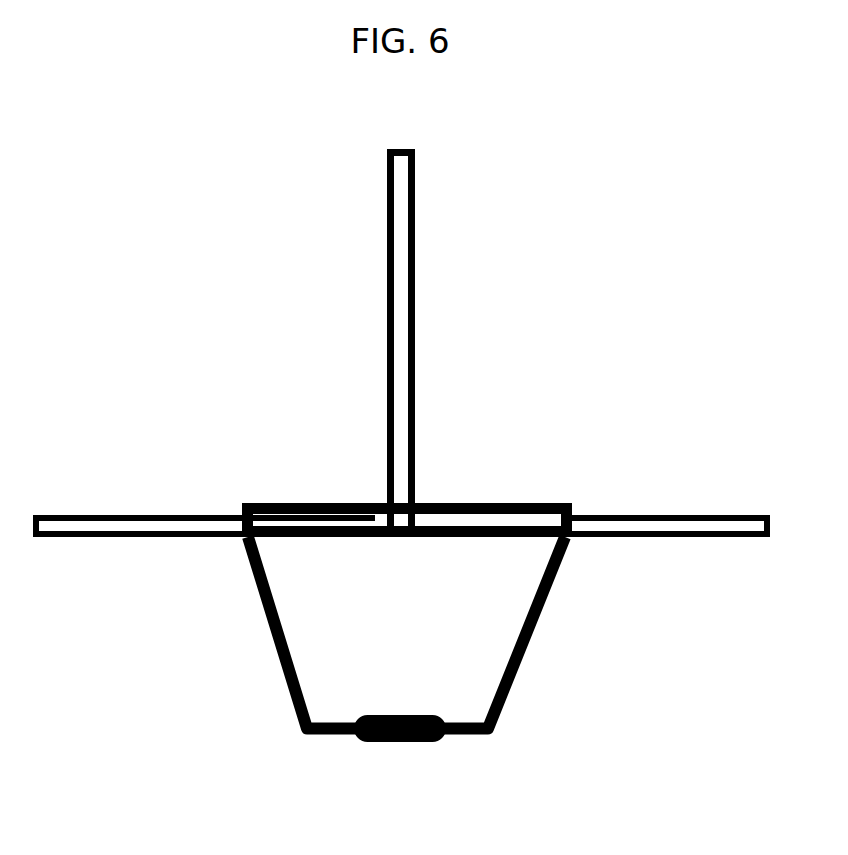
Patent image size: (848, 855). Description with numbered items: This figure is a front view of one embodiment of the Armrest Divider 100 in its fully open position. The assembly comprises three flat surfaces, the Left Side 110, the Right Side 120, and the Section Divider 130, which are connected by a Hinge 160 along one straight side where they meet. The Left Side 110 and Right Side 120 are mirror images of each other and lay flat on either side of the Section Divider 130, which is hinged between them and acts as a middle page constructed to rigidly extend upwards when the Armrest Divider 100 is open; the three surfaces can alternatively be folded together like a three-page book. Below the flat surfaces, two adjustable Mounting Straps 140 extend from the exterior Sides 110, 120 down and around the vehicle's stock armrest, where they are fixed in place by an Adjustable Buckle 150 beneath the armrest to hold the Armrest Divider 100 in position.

The Armrest Divider 100 is at (529, 226).
The Left Side 110 is at (612, 489).
The Right Side 120 is at (148, 485).
The Section Divider 130 is at (363, 205).
The Mounting Straps 140 is at (261, 671).
The Adjustable Buckle 150 is at (392, 758).
The Hinge 160 is at (370, 493).